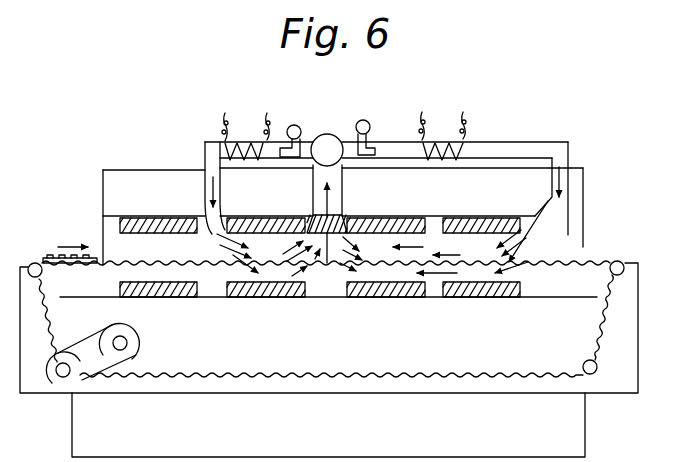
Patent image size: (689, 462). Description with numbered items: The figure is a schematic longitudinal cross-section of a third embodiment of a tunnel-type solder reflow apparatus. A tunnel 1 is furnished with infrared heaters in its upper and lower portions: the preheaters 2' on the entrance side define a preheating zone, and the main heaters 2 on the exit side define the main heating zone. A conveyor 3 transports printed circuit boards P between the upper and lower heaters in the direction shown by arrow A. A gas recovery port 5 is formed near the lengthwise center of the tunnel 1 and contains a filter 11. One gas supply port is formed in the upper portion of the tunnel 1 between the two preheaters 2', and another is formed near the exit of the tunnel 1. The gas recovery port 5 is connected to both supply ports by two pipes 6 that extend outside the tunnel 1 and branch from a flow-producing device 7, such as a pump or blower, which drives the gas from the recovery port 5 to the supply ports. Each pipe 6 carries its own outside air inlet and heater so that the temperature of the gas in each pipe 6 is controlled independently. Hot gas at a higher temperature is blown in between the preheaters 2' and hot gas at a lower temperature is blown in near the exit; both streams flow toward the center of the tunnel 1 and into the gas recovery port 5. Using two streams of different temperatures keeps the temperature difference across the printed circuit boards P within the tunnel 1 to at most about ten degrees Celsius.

The tunnel 1 is at (483, 257).
The main heaters 2 is at (328, 260).
The preheaters 2' is at (212, 261).
The conveyor 3 is at (600, 262).
The gas recovery port 5 is at (332, 263).
The pipe 6 is at (203, 155).
The flow-producing device 7 is at (327, 134).
The filter 11 is at (342, 210).
The printed circuit board P is at (46, 256).
The direction of conveyance A is at (73, 233).